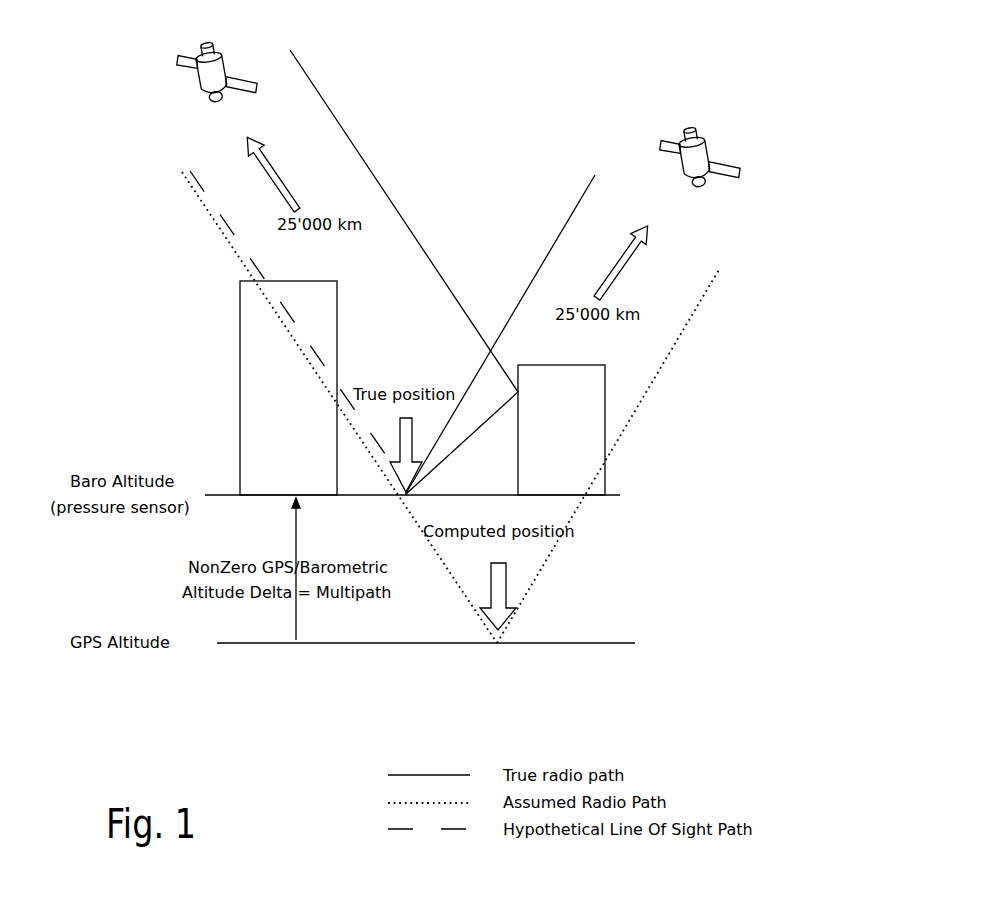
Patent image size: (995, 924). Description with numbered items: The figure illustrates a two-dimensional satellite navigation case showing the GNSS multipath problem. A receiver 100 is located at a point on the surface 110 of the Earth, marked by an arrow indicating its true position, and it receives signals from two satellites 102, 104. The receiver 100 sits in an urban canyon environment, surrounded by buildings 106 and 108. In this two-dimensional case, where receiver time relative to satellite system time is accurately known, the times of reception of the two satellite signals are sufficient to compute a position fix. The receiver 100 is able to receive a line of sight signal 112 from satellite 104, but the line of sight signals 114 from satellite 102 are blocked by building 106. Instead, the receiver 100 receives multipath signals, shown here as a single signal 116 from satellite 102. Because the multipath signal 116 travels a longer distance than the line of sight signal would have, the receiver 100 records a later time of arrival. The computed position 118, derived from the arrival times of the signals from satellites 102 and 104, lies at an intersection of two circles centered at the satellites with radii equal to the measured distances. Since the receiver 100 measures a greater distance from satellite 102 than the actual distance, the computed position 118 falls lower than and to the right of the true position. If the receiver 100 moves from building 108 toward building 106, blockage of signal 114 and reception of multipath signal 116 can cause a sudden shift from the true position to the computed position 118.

The receiver 100 is at (405, 497).
The satellite 102 is at (222, 70).
The satellite 104 is at (705, 157).
The building 106 is at (250, 302).
The building 108 is at (580, 383).
The surface of the Earth 110 is at (620, 497).
The line of sight signal 112 is at (570, 216).
The line of sight signals 114 is at (205, 208).
The multipath signal 116 is at (363, 157).
The computed position 118 is at (500, 645).